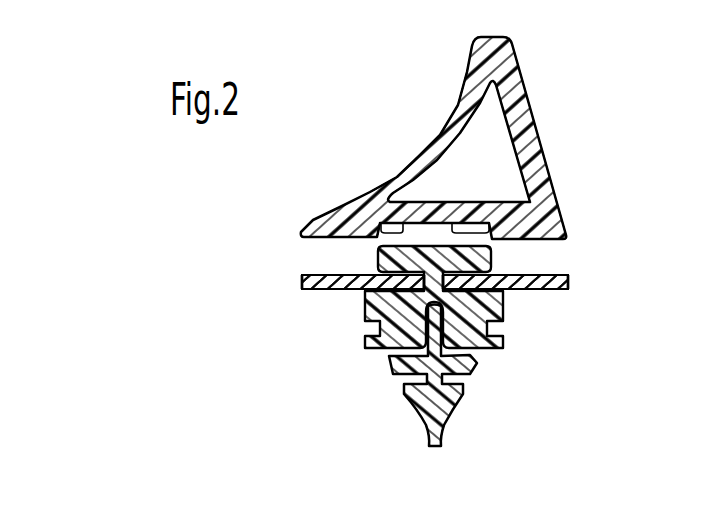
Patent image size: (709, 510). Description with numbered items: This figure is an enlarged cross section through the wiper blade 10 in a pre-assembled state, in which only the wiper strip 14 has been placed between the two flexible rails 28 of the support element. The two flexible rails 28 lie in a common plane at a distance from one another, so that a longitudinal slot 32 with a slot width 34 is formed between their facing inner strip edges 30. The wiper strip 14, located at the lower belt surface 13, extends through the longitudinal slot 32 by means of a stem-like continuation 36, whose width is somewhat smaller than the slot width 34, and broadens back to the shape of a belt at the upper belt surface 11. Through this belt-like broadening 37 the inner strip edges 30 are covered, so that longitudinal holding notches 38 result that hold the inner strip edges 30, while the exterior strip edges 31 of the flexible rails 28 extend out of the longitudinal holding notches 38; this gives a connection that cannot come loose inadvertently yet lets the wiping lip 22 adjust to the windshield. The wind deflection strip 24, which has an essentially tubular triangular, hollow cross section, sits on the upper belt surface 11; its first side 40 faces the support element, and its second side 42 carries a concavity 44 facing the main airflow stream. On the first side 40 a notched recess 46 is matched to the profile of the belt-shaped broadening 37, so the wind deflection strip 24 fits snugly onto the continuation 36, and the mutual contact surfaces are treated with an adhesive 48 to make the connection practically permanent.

The wiper blade 10 is at (600, 235).
The upper belt surface 11 is at (570, 276).
The lower belt surface 13 is at (551, 290).
The wiper strip 14 is at (489, 370).
The wiping lip 22 is at (437, 438).
The wind deflection strip 24 is at (537, 80).
The flexible rails 28 is at (568, 288).
The inner strip edges 30 is at (491, 268).
The exterior strip edges 31 is at (302, 284).
The longitudinal slot 32 is at (380, 330).
The slot width 34 is at (378, 259).
The stem-like continuation 36 is at (503, 323).
The belt-like broadening 37 is at (372, 228).
The longitudinal holding notches 38 is at (377, 270).
The first side 40 is at (442, 199).
The second side 42 is at (397, 177).
The concavity 44 is at (418, 156).
The notched recess 46 is at (525, 118).
The adhesive 48 is at (478, 243).